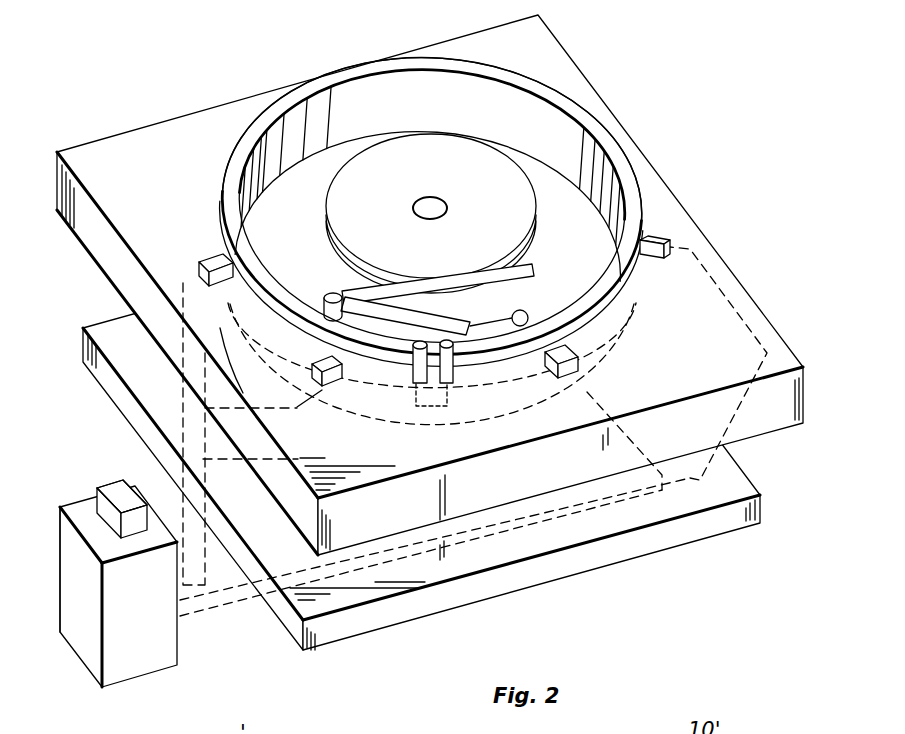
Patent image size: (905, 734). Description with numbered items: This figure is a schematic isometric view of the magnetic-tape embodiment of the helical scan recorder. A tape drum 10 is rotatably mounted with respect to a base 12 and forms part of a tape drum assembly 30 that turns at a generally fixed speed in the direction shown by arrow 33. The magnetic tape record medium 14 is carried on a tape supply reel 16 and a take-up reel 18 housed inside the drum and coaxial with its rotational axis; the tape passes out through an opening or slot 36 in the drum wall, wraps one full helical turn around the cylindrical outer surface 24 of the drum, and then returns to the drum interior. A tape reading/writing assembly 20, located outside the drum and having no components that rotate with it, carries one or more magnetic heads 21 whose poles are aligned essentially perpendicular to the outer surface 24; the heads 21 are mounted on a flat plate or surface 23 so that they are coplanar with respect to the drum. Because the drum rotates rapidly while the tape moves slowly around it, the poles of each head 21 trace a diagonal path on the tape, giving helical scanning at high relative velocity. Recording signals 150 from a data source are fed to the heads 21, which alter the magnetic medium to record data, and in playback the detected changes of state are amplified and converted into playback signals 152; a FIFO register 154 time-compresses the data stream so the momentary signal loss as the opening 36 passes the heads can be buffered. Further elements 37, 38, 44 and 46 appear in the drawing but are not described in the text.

The tape drum 10 is at (586, 90).
The base 12 is at (744, 489).
The tape record medium 14 is at (388, 368).
The tape supply reel 16 is at (522, 284).
The take-up reel 18 is at (508, 191).
The tape reading/writing assembly 20 is at (133, 672).
The magnetic head 21 is at (214, 260).
The flat plate or surface 23 is at (110, 140).
The cylindrical outer surface 24 is at (487, 356).
The tape drum assembly 30 is at (624, 150).
The arrow 33 is at (230, 126).
The opening or slot 36 is at (436, 408).
The post 37 is at (418, 343).
The post 38 is at (447, 342).
The pivot post 44 is at (333, 292).
The pivot pin 46 is at (528, 314).
The recording signals 150 is at (123, 488).
The playback signals 152 is at (80, 591).
The FIFO register 154 is at (98, 495).